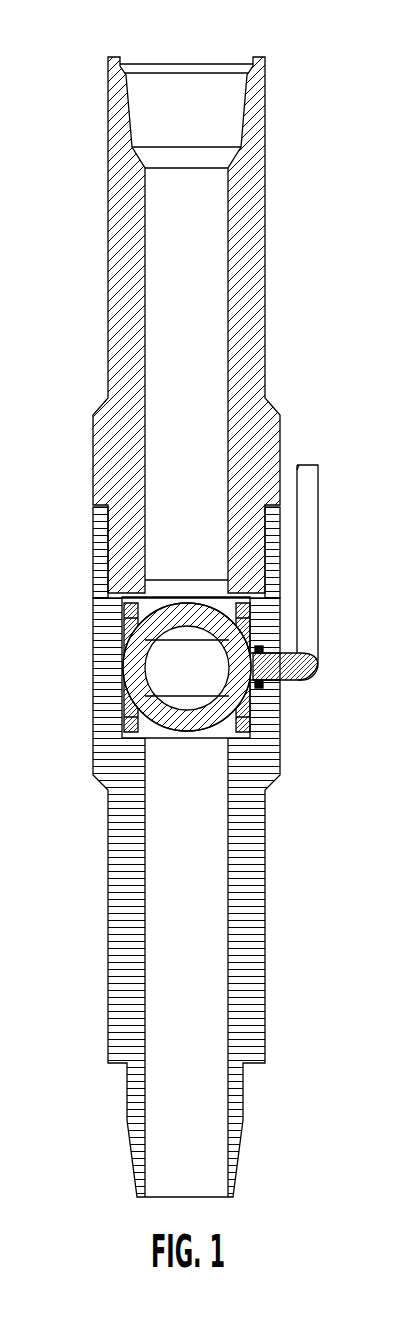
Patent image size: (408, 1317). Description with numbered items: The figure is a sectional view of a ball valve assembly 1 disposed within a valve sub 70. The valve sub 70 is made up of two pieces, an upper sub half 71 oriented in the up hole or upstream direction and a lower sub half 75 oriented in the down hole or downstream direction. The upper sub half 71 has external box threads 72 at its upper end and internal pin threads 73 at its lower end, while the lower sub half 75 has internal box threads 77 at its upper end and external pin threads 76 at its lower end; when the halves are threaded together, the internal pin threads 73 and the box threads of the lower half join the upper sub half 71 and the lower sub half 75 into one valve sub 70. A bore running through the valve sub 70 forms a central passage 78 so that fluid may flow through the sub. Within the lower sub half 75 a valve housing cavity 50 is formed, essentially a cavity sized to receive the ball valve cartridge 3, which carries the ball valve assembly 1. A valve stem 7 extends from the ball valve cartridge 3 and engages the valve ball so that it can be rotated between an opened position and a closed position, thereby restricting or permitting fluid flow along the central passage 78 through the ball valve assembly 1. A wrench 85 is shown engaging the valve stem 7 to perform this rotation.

The ball valve assembly 1 is at (215, 897).
The ball valve cartridge 3 is at (257, 750).
The valve stem 7 is at (263, 690).
The valve housing cavity 50 is at (115, 742).
The valve sub 70 is at (224, 296).
The upper sub half 71 is at (290, 338).
The external box threads 72 is at (252, 88).
The internal pin threads 73 is at (92, 550).
The lower sub half 75 is at (215, 897).
The external pin threads 76 is at (243, 1132).
The internal box threads 77 is at (92, 587).
The central passage 78 is at (174, 250).
The wrench 85 is at (318, 527).